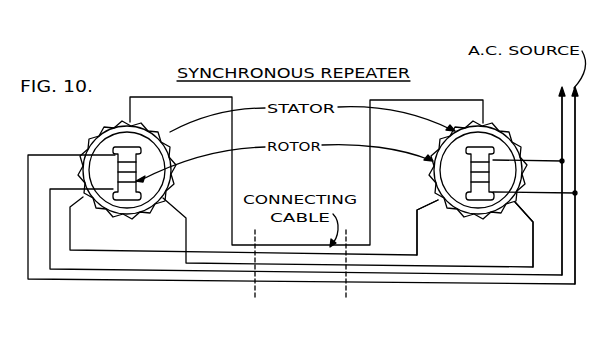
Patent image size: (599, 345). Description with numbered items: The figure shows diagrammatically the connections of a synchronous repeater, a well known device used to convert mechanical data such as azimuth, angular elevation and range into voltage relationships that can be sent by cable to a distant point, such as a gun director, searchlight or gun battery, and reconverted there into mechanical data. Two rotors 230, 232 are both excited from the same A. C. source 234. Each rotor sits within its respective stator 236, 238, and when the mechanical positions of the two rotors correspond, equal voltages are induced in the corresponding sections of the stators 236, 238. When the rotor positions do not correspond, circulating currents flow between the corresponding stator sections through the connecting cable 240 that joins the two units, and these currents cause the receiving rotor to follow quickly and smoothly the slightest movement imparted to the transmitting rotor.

The rotor 230 is at (452, 130).
The rotor 232 is at (166, 133).
The A. C. source 234 is at (570, 118).
The stator 236 is at (475, 219).
The stator 238 is at (124, 219).
The connecting cable 240 is at (285, 258).